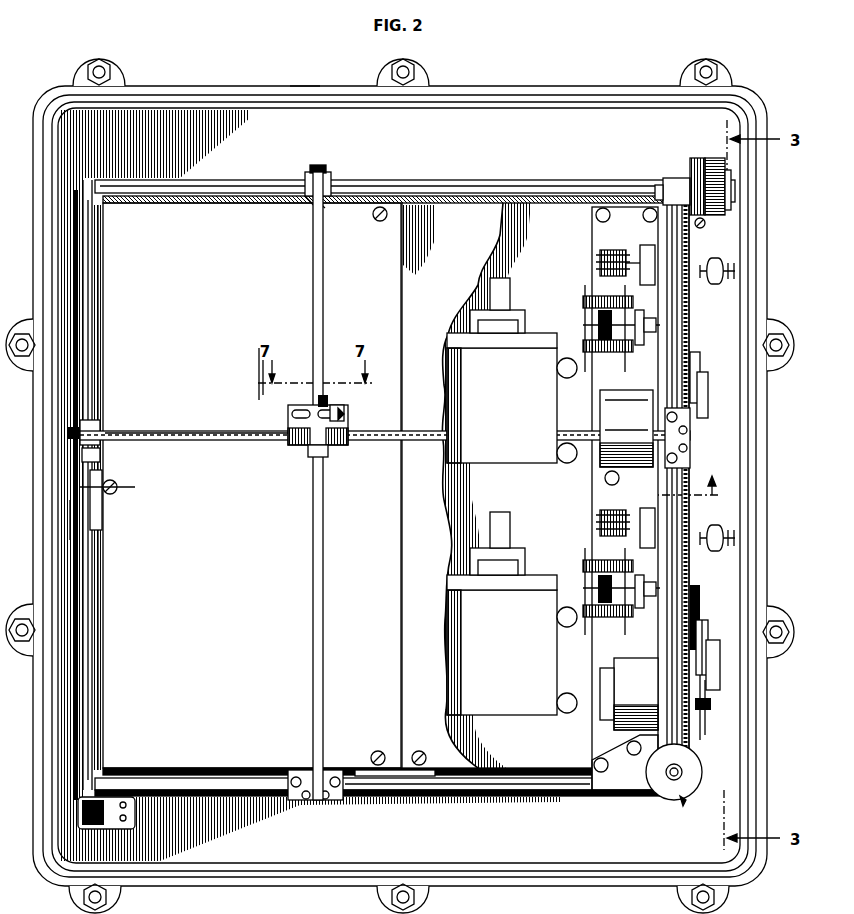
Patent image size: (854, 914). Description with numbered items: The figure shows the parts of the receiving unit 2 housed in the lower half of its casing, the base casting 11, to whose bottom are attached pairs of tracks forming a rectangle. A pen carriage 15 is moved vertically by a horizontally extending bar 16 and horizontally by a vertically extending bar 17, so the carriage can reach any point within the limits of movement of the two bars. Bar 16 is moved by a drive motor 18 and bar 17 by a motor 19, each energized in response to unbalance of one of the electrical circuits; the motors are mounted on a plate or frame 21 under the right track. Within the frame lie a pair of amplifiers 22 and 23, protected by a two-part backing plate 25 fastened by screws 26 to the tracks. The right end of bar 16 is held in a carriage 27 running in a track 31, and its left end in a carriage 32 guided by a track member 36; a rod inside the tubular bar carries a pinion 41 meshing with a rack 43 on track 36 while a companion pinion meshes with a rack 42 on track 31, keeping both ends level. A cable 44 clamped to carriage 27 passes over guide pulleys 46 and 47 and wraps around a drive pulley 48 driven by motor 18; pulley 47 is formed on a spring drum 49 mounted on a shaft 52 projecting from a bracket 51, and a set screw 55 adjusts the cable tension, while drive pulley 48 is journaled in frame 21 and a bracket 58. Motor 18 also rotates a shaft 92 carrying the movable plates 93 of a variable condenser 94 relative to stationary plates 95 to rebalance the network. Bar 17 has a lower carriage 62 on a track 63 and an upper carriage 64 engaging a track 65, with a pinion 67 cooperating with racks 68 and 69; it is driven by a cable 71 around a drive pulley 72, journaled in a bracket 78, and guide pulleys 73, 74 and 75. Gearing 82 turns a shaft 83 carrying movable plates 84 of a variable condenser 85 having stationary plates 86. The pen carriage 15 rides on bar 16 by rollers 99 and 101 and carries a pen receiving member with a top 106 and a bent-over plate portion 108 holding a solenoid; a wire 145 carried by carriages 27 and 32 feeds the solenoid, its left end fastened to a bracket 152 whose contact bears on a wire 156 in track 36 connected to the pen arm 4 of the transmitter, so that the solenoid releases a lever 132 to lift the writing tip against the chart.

The receiving unit 2 is at (531, 71).
The pen arm 4 is at (66, 520).
The base casting 11 is at (300, 86).
The pen carriage 15 is at (366, 409).
The horizontally extending bar 16 is at (402, 440).
The vertically extending bar 17 is at (312, 528).
The drive motor 18 is at (605, 410).
The motor 19 is at (612, 669).
The frame 21 is at (660, 183).
The amplifier 22 is at (530, 470).
The amplifier 23 is at (542, 712).
The backing plate 25 is at (448, 790).
The screws 26 is at (425, 752).
The carriage 27 is at (692, 440).
The track 31 is at (680, 328).
The carriage 32 is at (100, 425).
The track member 36 is at (98, 582).
The pinion 41 is at (95, 410).
The rack 42 is at (688, 343).
The rack 43 is at (93, 345).
The cable 44 is at (690, 300).
The guide pulley 46 is at (680, 802).
The guide pulley 47 is at (695, 158).
The drive pulley 48 is at (700, 362).
The spring drum 49 is at (710, 158).
The bracket 51 is at (708, 218).
The shaft 52 is at (732, 195).
The set screw 55 is at (705, 226).
The bracket 58 is at (706, 395).
The carriage 62 is at (316, 800).
The track 63 is at (377, 783).
The carriage 64 is at (313, 208).
The track 65 is at (408, 197).
The pinion 67 is at (330, 178).
The rack 68 is at (412, 797).
The rack 69 is at (378, 181).
The cable 71 is at (552, 795).
The drive pulley 72 is at (708, 625).
The guide pulley 73 is at (706, 727).
The guide pulley 74 is at (700, 776).
The guide pulley 75 is at (98, 819).
The bracket 78 is at (714, 645).
The gearing 82 is at (700, 600).
The shaft 83 is at (645, 618).
The movable plates 84 is at (600, 626).
The variable condenser 85 is at (583, 552).
The stationary plates 86 is at (600, 570).
The shaft 92 is at (640, 355).
The movable plates 93 is at (600, 362).
The variable condenser 94 is at (583, 287).
The stationary plates 95 is at (600, 300).
The roller 99 is at (345, 440).
The roller 101 is at (290, 443).
The top 106 is at (335, 408).
The bent-over top portion of plate 108 is at (290, 412).
The lever 132 is at (328, 405).
The wire 145 is at (228, 440).
The bracket 152 is at (100, 456).
The wire 156 is at (92, 552).